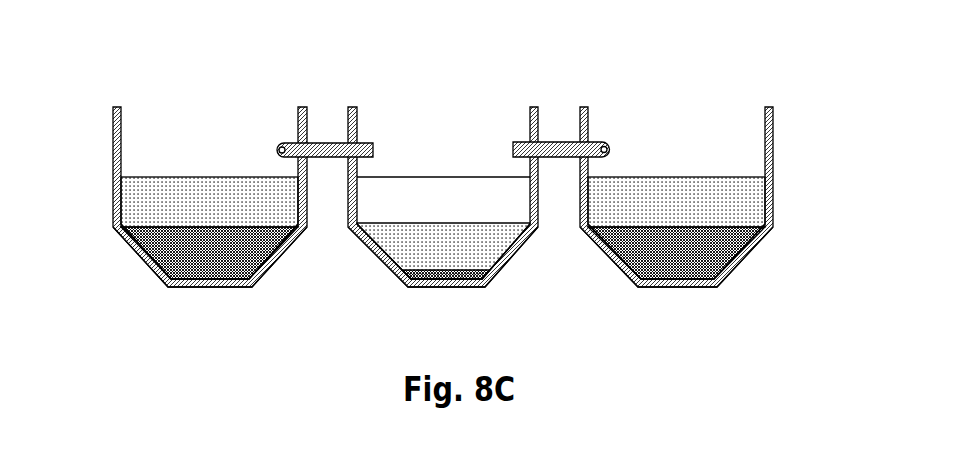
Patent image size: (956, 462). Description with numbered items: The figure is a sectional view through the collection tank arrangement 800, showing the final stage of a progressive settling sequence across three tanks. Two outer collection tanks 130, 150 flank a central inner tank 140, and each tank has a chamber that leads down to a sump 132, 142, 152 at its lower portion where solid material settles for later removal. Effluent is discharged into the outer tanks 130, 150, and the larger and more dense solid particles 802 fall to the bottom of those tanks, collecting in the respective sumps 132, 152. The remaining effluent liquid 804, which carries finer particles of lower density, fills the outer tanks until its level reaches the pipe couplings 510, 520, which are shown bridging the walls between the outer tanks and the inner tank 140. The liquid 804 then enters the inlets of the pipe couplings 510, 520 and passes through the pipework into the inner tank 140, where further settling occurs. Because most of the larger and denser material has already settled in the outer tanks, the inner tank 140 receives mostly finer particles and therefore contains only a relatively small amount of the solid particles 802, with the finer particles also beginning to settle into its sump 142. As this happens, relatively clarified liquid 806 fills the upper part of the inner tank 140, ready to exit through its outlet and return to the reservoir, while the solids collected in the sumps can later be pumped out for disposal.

The sedimentation system 800 is at (246, 67).
The collection tank 130 is at (113, 142).
The sump 132 is at (263, 270).
The inner tank 140 is at (358, 133).
The sump 142 is at (382, 255).
The collection tank 150 is at (773, 137).
The sump 152 is at (615, 265).
The pipe coupling 510 is at (327, 145).
The pipe coupling 520 is at (545, 150).
The solid particles 802 is at (210, 277).
The effluent liquid 804 is at (143, 200).
The clarified liquid 806 is at (408, 197).